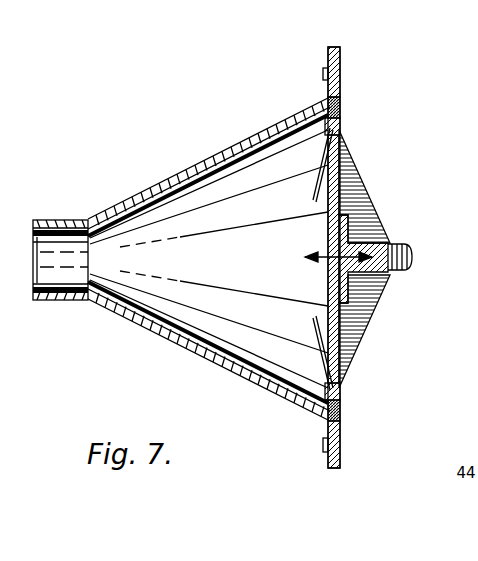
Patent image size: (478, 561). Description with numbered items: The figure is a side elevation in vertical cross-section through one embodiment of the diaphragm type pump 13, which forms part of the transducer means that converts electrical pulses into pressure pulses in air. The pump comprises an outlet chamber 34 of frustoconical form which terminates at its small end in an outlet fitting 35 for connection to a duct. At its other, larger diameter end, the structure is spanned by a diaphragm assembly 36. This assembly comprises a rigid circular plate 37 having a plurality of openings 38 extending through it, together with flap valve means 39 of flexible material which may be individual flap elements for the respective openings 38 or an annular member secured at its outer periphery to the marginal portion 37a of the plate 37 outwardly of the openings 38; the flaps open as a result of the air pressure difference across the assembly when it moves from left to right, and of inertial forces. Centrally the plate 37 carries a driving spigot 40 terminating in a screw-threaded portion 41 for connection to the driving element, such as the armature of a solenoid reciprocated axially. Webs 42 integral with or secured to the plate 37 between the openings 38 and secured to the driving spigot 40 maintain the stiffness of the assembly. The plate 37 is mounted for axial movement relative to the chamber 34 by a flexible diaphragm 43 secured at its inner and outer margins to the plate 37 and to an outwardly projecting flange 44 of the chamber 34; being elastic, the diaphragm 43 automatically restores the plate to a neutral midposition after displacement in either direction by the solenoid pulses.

The pump 13 is at (120, 365).
The outlet chamber 34 is at (194, 166).
The outlet fitting 35 is at (68, 218).
The diaphragm assembly 36 is at (383, 62).
The rigid circular plate 37 is at (327, 235).
The marginal portion 37a is at (326, 128).
The openings 38 is at (341, 142).
The flap valve means 39 is at (318, 180).
The driving spigot 40 is at (365, 237).
The screw-threaded portion 41 is at (400, 246).
The webs 42 is at (357, 185).
The flexible diaphragm 43 is at (340, 106).
The outwardly projecting flange 44 is at (326, 70).